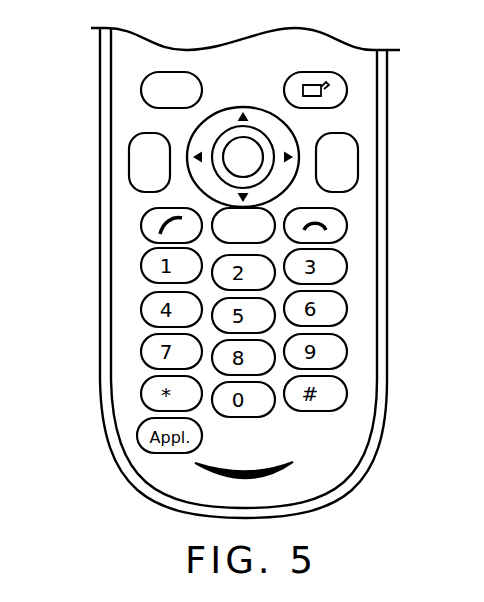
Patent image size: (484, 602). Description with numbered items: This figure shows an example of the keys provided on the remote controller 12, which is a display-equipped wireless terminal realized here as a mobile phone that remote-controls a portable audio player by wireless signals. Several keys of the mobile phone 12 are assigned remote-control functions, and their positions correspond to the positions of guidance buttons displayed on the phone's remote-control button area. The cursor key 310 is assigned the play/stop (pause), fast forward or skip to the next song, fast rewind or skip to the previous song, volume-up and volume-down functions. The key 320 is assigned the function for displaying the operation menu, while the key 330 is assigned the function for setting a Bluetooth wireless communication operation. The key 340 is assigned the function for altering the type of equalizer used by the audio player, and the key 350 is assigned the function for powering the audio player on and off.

The remote controller 12 is at (389, 379).
The cursor key 310 is at (190, 170).
The key 320 is at (141, 89).
The key 330 is at (347, 87).
The key 340 is at (347, 225).
The key 350 is at (215, 230).